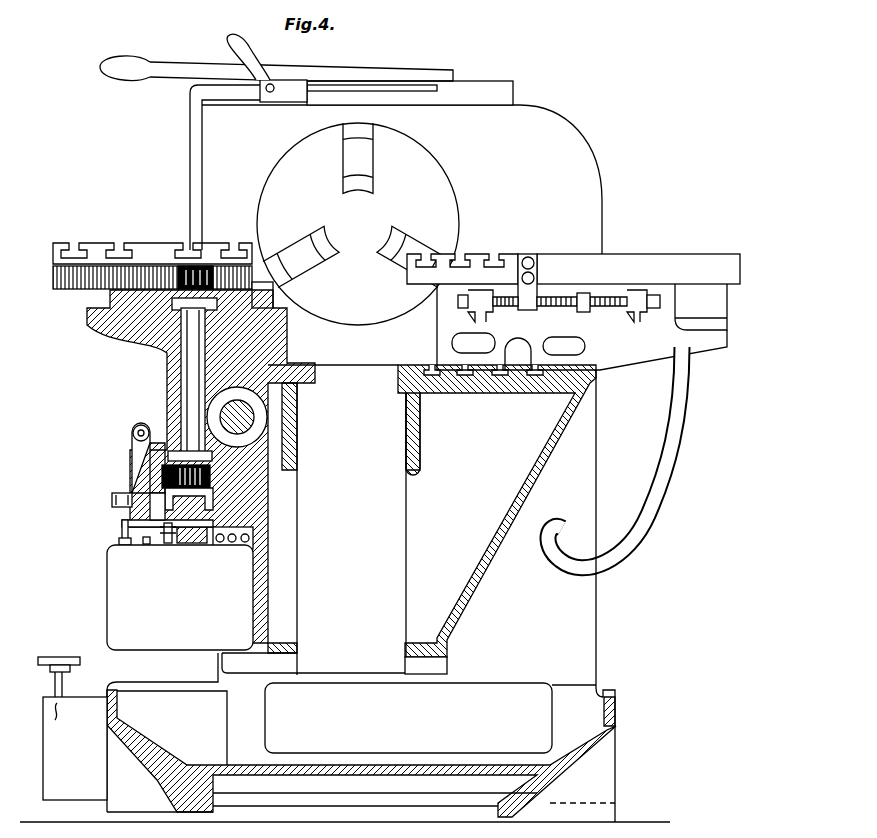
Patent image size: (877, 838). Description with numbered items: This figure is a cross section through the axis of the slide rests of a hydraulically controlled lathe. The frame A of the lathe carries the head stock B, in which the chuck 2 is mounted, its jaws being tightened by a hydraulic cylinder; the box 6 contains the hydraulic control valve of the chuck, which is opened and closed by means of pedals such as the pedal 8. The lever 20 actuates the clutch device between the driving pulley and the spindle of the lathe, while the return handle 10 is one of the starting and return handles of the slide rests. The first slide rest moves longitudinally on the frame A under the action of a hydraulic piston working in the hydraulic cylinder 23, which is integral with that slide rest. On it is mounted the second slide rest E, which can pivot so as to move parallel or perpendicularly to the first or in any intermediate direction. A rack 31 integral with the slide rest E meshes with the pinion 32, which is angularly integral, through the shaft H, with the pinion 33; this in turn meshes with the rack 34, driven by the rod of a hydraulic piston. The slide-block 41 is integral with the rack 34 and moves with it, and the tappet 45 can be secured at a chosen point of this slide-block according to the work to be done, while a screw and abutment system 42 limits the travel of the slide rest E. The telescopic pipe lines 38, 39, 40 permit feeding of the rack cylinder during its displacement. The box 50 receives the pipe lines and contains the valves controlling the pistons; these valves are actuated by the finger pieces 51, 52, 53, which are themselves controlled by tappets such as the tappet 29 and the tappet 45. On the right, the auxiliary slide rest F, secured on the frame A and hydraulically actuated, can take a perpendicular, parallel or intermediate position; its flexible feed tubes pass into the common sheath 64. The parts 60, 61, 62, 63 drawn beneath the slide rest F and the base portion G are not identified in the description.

The chuck 2 is at (358, 224).
The return handle 10 is at (230, 43).
The lever 20 is at (131, 74).
The rack 31 is at (63, 289).
The pinion 32 is at (205, 272).
The hydraulic cylinder 23 is at (228, 414).
The screw and abutment system 42 is at (130, 434).
The rack 34 is at (145, 470).
The slide-block 41 is at (160, 477).
The tappet 45 is at (112, 497).
The pinion 33 is at (210, 478).
The tappet 29 is at (165, 522).
The finger piece 51 is at (119, 541).
The finger piece 52 is at (144, 545).
The finger piece 53 is at (168, 543).
The telescopic pipe line 38 is at (219, 543).
The telescopic pipe line 39 is at (232, 543).
The telescopic pipe line 40 is at (245, 543).
The box 50 is at (180, 597).
The cam plate 60 is at (582, 327).
The spring rod 61 is at (553, 306).
The clamp post 62 is at (524, 302).
The nut 63 is at (585, 310).
The common sheath 64 is at (688, 410).
The pedal 8 is at (62, 657).
The box 6 is at (75, 748).
The frame A is at (409, 520).
The hand stock B is at (402, 179).
The second slide rest E is at (152, 252).
The auxiliary slide rest F is at (573, 269).
The base G is at (606, 709).
The shaft H is at (192, 379).